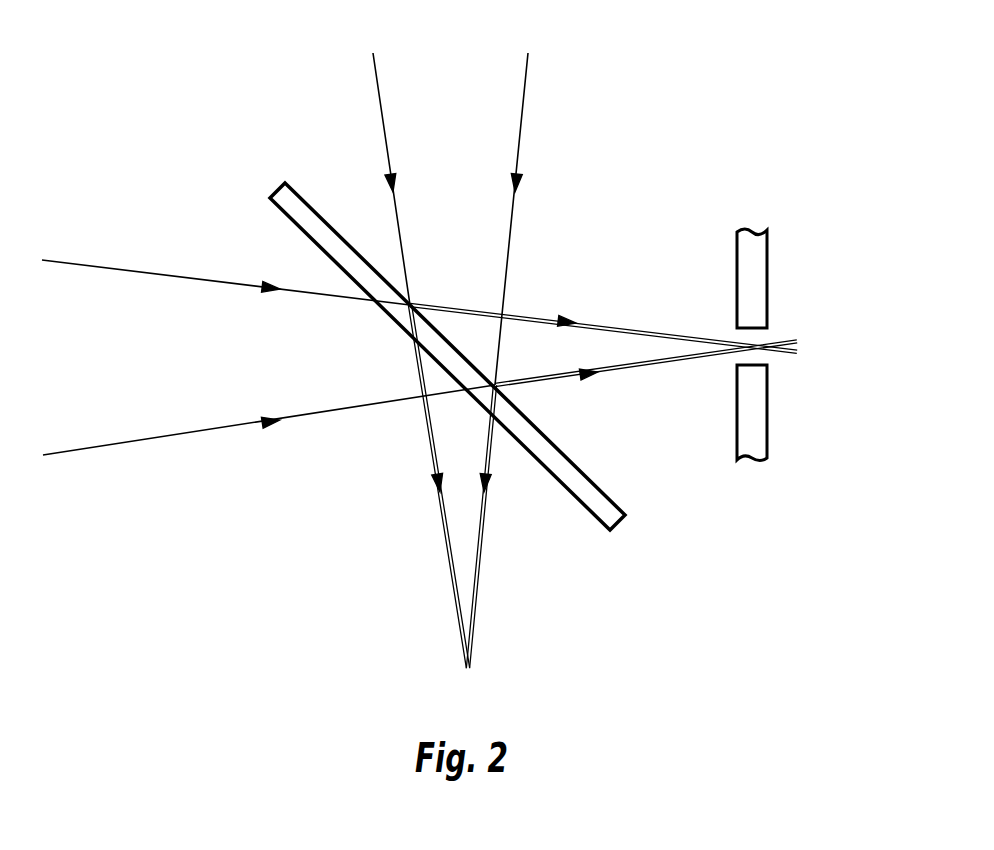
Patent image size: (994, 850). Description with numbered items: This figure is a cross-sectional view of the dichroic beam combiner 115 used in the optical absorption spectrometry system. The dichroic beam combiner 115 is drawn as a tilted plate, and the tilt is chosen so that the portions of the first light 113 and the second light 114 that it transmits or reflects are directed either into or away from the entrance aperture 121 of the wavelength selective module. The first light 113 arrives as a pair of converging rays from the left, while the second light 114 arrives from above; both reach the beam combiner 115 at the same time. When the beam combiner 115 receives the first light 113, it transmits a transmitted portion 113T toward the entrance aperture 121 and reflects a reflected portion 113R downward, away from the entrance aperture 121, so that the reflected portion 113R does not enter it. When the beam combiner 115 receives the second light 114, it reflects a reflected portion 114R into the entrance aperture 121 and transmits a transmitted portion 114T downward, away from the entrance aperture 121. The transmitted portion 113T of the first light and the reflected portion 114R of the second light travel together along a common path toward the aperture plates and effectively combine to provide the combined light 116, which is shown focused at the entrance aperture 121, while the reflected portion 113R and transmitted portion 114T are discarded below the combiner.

The first light 113 is at (160, 433).
The second light 114 is at (524, 92).
The dichroic beam combiner 115 is at (593, 490).
The combined light 116 is at (760, 345).
The entrance aperture 121 is at (760, 351).
The transmitted portion 113T is at (613, 368).
The reflected portion 113R is at (448, 585).
The transmitted portion 114T is at (452, 550).
The reflected portion 114R is at (534, 320).